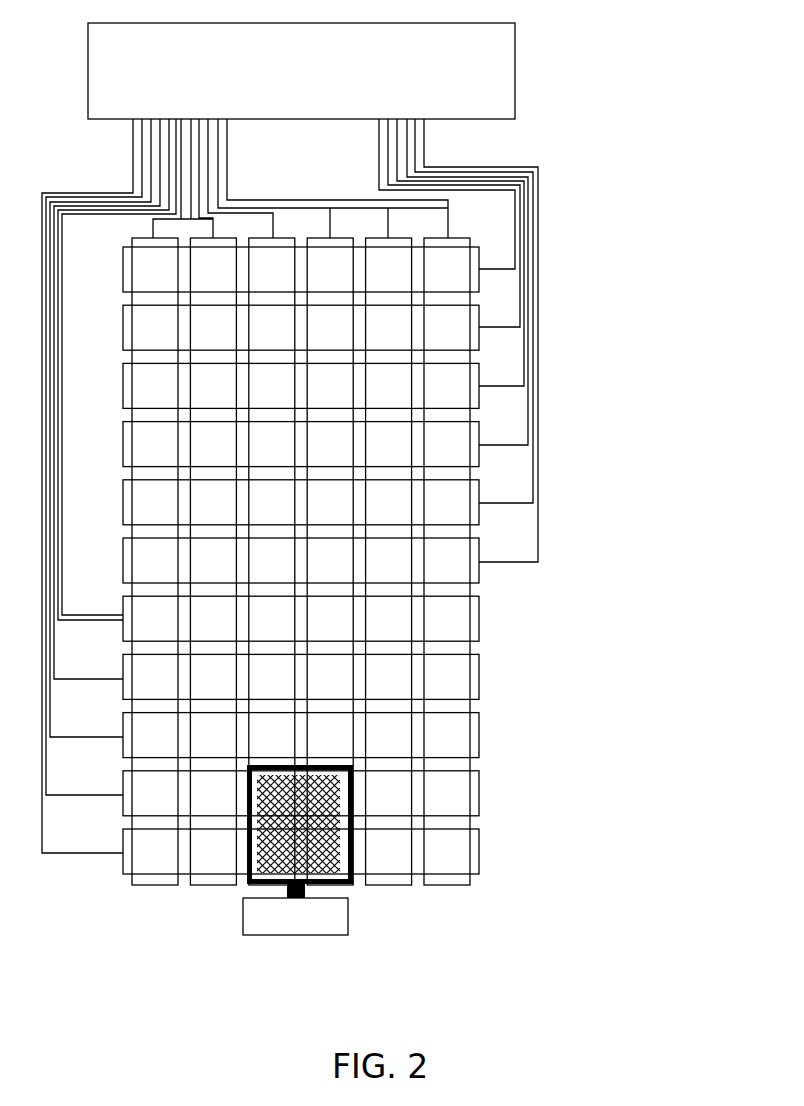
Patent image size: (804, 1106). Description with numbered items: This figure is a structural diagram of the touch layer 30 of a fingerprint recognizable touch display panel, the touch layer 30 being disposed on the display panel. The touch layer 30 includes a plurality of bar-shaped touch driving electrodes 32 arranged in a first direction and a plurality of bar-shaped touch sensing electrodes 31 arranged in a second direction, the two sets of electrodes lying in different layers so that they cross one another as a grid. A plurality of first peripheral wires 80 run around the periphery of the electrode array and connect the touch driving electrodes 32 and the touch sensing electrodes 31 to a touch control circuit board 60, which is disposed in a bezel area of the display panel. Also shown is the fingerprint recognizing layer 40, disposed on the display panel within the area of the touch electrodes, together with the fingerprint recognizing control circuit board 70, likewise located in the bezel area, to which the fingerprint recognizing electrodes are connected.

The touch control circuit board 60 is at (488, 73).
The touch layer 30 is at (409, 521).
The touch sensing electrodes 31 is at (470, 240).
The touch driving electrodes 32 is at (477, 390).
The first peripheral wires 80 is at (538, 530).
The fingerprint recognizing layer 40 is at (350, 817).
The fingerprint recognizing control circuit board 70 is at (340, 912).